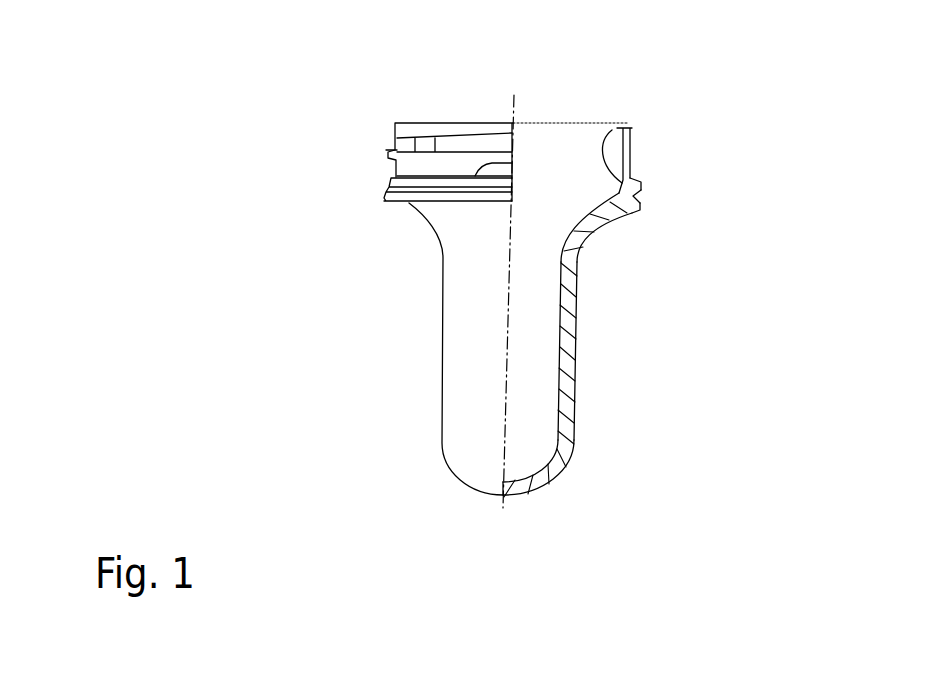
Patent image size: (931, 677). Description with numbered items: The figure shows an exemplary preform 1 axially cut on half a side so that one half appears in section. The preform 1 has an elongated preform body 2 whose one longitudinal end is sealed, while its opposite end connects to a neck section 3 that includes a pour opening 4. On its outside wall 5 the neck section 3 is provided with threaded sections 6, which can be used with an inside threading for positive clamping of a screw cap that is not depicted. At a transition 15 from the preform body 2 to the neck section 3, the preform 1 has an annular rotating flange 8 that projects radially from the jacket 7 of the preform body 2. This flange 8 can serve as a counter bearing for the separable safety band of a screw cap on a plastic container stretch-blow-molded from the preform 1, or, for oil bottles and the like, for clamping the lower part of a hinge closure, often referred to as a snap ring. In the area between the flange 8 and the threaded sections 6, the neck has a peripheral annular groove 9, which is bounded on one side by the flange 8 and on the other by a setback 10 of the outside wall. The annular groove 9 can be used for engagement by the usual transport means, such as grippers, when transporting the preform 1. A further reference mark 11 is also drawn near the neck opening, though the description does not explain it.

The preform 1 is at (186, 241).
The preform body 2 is at (567, 450).
The neck section 3 is at (408, 130).
The pour opening 4 is at (557, 140).
The outside wall 5 is at (634, 137).
The threaded sections 6 is at (398, 150).
The jacket 7 is at (579, 368).
The annular rotating flange 8 is at (631, 207).
The peripheral annular groove 9 is at (636, 189).
The setback 10 is at (634, 186).
The neck opening 11 is at (612, 130).
The transition 15 is at (613, 213).